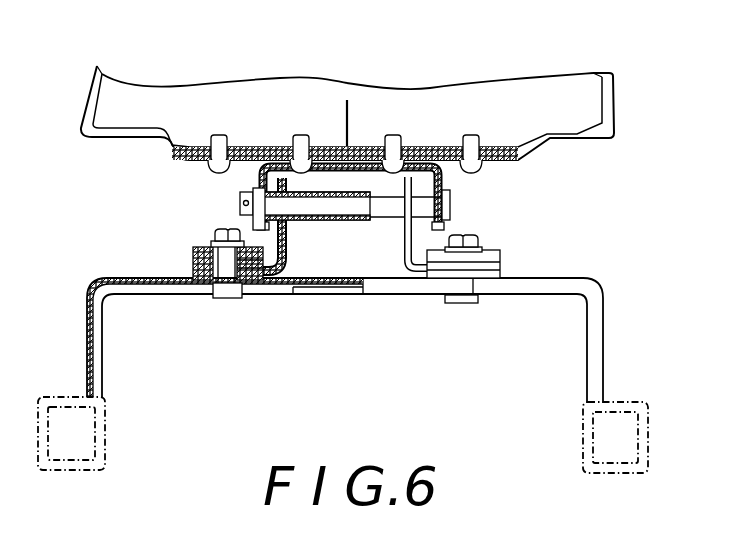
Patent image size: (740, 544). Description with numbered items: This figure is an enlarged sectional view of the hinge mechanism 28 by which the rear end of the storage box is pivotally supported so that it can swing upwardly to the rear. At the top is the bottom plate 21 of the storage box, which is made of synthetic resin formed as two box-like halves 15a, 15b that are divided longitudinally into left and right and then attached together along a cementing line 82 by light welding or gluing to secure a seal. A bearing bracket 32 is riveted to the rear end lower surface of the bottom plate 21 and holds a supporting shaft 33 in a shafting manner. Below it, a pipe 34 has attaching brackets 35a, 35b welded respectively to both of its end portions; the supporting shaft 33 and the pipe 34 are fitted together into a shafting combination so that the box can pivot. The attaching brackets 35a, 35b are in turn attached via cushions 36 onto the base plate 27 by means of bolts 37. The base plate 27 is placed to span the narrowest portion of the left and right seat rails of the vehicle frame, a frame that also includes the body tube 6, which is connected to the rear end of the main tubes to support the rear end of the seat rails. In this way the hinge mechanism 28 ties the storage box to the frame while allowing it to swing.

The body tube 6 is at (647, 423).
The box-like half 15a is at (282, 92).
The box-like half 15b is at (472, 97).
The bottom plate 21 is at (160, 128).
The base plate 27 is at (603, 308).
The hinge mechanism 28 is at (476, 188).
The bearing bracket 32 is at (258, 170).
The supporting shaft 33 is at (453, 210).
The pipe 34 is at (380, 217).
The attaching bracket 35a is at (293, 290).
The attaching bracket 35b is at (407, 290).
The cushion 36 is at (193, 270).
The bolt 37 is at (228, 300).
The cementing line 82 is at (348, 100).